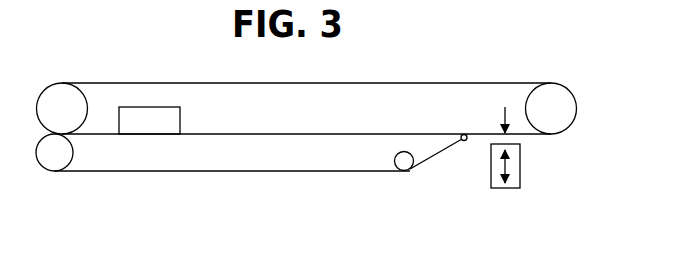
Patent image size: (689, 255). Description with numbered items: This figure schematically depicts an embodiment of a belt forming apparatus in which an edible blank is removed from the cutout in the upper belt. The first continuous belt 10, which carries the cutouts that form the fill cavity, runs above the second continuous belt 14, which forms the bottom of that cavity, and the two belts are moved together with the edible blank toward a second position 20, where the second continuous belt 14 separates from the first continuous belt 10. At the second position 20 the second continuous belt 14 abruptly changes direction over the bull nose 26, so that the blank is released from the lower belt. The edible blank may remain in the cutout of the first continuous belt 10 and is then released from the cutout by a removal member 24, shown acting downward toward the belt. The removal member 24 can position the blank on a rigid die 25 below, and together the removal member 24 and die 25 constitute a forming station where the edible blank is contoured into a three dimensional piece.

The first continuous belt 10 is at (393, 82).
The second continuous belt 14 is at (312, 171).
The second position 20 is at (471, 142).
The removal member 24 is at (505, 108).
The die 25 is at (520, 170).
The bull nose 26 is at (462, 141).